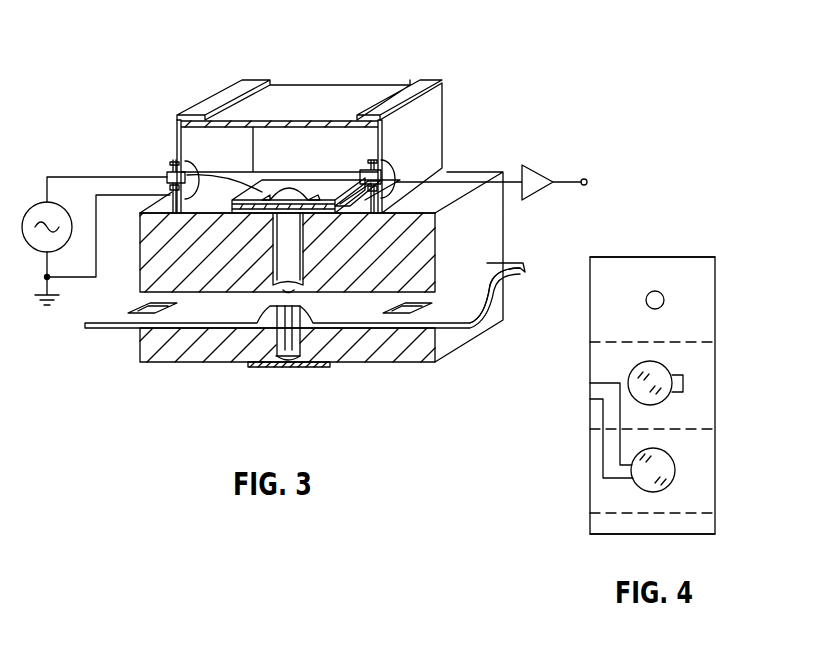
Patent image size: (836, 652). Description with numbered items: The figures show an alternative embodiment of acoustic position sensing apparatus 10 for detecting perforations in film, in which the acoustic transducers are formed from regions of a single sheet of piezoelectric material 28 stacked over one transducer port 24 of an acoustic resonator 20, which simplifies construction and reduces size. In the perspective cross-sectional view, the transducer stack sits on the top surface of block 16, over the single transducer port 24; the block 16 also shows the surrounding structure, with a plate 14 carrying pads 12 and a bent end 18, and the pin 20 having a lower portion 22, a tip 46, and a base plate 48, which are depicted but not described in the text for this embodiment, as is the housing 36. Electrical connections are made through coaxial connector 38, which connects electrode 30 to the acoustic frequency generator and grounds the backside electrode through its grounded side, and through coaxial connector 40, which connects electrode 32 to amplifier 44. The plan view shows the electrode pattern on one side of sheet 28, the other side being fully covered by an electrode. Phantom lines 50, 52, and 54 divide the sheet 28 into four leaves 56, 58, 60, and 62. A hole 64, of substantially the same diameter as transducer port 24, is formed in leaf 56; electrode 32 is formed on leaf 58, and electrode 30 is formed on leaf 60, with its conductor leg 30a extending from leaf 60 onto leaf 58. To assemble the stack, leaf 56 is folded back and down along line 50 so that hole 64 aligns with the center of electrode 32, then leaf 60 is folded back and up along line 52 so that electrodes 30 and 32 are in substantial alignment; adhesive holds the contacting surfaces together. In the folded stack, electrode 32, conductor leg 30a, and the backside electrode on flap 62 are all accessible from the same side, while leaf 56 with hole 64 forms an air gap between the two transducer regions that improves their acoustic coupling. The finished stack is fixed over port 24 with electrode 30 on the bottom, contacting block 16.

In FIG. 3, the acoustic position sensing apparatus 10 is at (450, 60).
In FIG. 3, the electrode pads 12 is at (145, 312).
In FIG. 3, the test plate 14 is at (97, 318).
In FIG. 3, the block 16 is at (494, 212).
In FIG. 3, the plate bent end 18 is at (490, 262).
In FIG. 3, the acoustic resonator 20 is at (300, 228).
In FIG. 3, the pin lower portion 22 is at (300, 256).
In FIG. 3, the transducer port 24 is at (265, 214).
In FIG. 4, the sheet of piezoelectric material 28 is at (724, 240).
In FIG. 4, the electrode 30 is at (672, 476).
In FIG. 3, the conductor leg 30a is at (250, 188).
In FIG. 4, the conductor leg 30a is at (612, 405).
In FIG. 3, the electrode 32 is at (285, 185).
In FIG. 4, the electrode 32 is at (670, 370).
In FIG. 3, the housing 36 is at (388, 92).
In FIG. 3, the coaxial connector 38 is at (172, 168).
In FIG. 3, the coaxial connector 40 is at (400, 165).
In FIG. 3, the amplifier 44 is at (535, 173).
In FIG. 3, the pin tip 46 is at (287, 364).
In FIG. 3, the base plate 48 is at (316, 368).
In FIG. 4, the phantom line 50 is at (585, 342).
In FIG. 4, the phantom line 52 is at (585, 450).
In FIG. 4, the phantom line 54 is at (588, 522).
In FIG. 4, the leaf 56 is at (705, 292).
In FIG. 4, the leaf 58 is at (700, 402).
In FIG. 4, the leaf 60 is at (700, 444).
In FIG. 3, the leaf 62 is at (322, 190).
In FIG. 4, the leaf 62 is at (705, 522).
In FIG. 4, the hole 64 is at (658, 298).